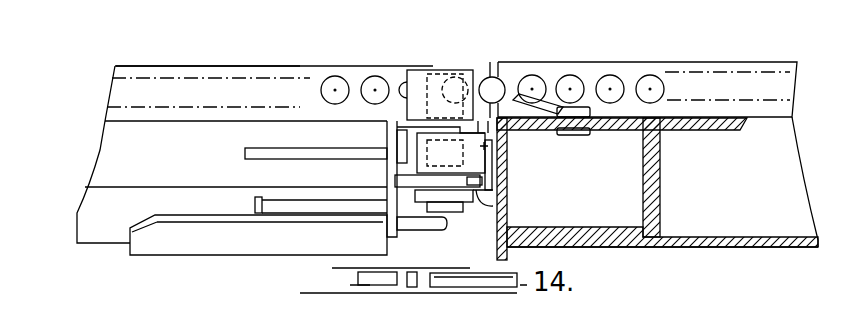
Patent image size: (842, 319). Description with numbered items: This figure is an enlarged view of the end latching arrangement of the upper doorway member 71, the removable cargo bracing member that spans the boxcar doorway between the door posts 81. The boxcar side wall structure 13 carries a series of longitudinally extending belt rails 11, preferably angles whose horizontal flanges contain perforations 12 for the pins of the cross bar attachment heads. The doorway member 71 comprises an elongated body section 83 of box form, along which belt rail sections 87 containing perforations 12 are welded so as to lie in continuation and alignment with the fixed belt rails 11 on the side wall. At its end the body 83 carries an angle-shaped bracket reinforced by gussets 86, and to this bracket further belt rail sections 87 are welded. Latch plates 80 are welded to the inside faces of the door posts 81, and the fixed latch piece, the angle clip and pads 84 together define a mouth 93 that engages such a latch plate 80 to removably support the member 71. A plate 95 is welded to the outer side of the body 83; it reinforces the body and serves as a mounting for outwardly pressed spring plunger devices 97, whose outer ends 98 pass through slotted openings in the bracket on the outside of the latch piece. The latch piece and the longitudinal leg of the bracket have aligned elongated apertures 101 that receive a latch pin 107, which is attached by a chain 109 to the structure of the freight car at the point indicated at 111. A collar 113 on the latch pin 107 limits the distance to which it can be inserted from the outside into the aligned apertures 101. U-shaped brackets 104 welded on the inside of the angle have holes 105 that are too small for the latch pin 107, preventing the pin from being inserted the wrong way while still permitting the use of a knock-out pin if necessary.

The belt rail 11 is at (693, 58).
The perforation 12 is at (645, 77).
The side wall structure 13 is at (750, 247).
The upper doorway member 71 is at (266, 63).
The latch plate 80 is at (451, 153).
The door post 81 is at (653, 230).
The body section 83 is at (90, 213).
The pad 84 is at (400, 147).
The gusset 86 is at (245, 153).
The belt rail section 87 is at (182, 66).
The mouth 93 is at (403, 169).
The plate 95 is at (166, 246).
The spring plunger device 97 is at (267, 212).
The outer end of spring plunger 98 is at (423, 226).
The elongated aperture 101 is at (498, 146).
The U-shaped bracket 104 is at (467, 68).
The hole 105 is at (442, 62).
The latch pin 107 is at (457, 214).
The chain 109 is at (547, 97).
The chain attachment to car structure 111 is at (583, 107).
The collar 113 is at (500, 201).